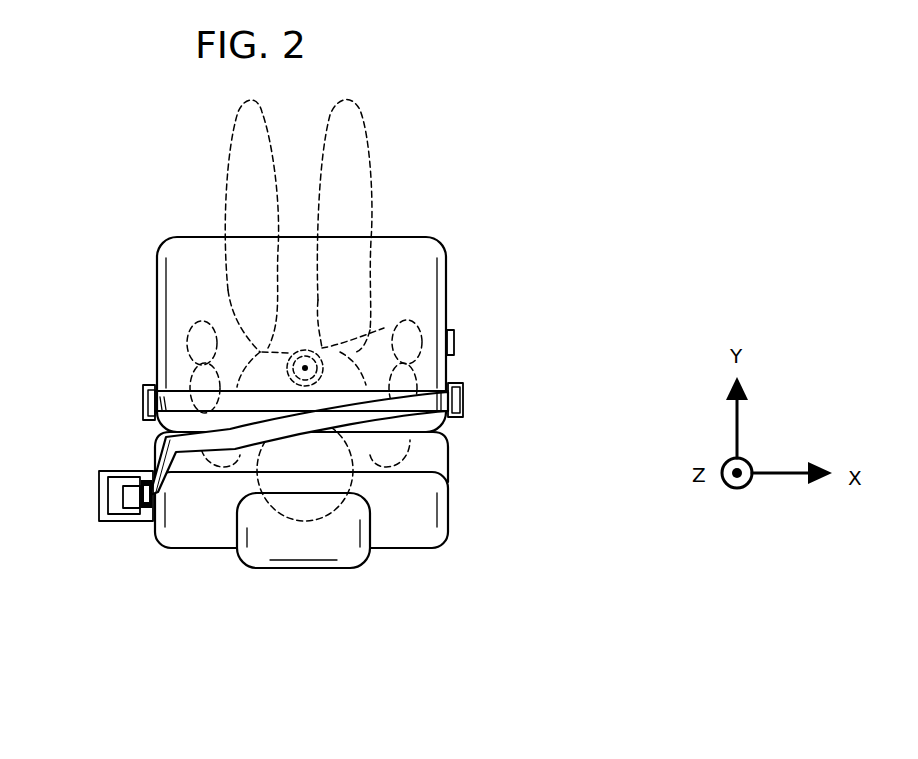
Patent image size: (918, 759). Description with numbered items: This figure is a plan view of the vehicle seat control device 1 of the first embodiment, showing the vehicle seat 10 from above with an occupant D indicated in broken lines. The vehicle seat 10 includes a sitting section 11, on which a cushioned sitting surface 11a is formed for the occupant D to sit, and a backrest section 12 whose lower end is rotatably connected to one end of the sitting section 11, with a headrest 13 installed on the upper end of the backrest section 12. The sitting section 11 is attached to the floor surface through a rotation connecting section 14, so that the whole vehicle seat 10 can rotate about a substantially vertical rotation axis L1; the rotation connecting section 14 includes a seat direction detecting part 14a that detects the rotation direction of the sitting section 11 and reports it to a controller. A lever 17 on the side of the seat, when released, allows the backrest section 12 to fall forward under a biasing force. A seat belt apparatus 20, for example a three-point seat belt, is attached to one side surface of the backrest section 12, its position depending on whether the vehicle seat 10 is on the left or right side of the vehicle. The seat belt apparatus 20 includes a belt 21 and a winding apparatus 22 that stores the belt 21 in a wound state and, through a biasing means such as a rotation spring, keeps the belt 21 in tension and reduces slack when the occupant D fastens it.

The vehicle seat control device 1 is at (270, 411).
The vehicle seat 10 is at (293, 412).
The sitting section 11 is at (150, 303).
The sitting surface 11a is at (178, 250).
The backrest section 12 is at (425, 533).
The headrest 13 is at (348, 552).
The rotation connecting section 14 is at (322, 335).
The seat direction detecting part 14a is at (384, 327).
The lever 17 is at (456, 341).
The seat belt apparatus 20 is at (92, 505).
The belt 21 is at (157, 397).
The winding apparatus 22 is at (115, 508).
The occupant D is at (377, 173).
The rotation axis L1 is at (300, 363).